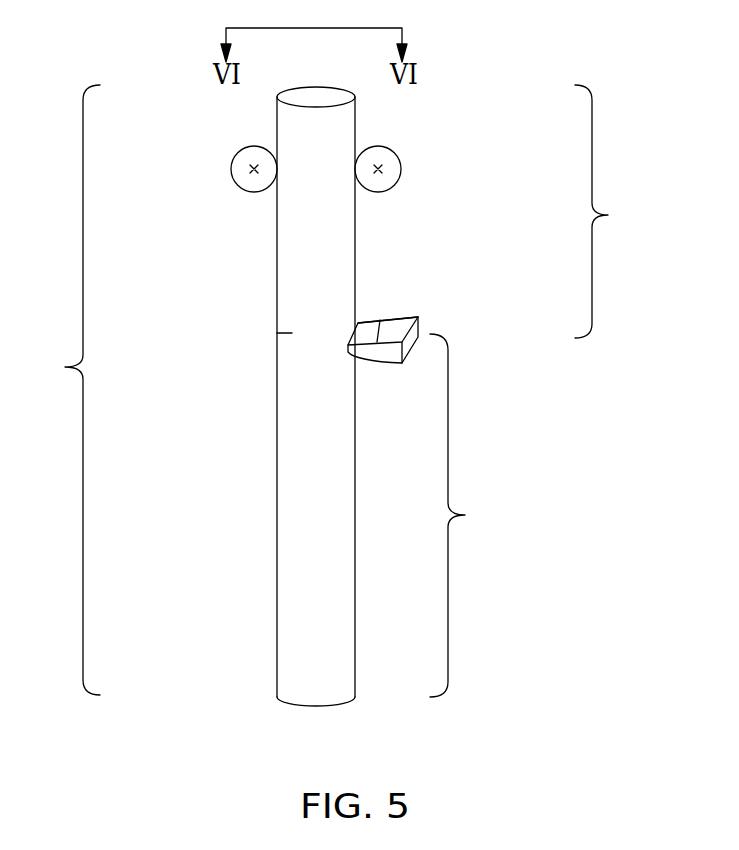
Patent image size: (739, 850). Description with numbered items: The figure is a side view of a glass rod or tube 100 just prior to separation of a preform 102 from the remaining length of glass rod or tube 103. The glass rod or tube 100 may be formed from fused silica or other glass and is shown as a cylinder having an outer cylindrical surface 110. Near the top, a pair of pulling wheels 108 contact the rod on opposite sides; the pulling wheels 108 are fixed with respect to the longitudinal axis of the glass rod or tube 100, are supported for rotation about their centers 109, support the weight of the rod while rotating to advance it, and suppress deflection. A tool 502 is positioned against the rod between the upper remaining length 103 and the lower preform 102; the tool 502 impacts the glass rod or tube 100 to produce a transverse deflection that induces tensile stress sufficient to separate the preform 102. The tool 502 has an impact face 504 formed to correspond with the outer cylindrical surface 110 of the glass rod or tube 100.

The glass rod or tube 100 is at (60, 390).
The preform 102 is at (470, 515).
The remaining length of glass rod or tube 103 is at (615, 211).
The pulling wheels 108 is at (233, 161).
The centers 109 is at (254, 169).
The outer cylindrical surface 110 is at (355, 232).
The tool 502 is at (420, 318).
The impact face 504 is at (360, 321).